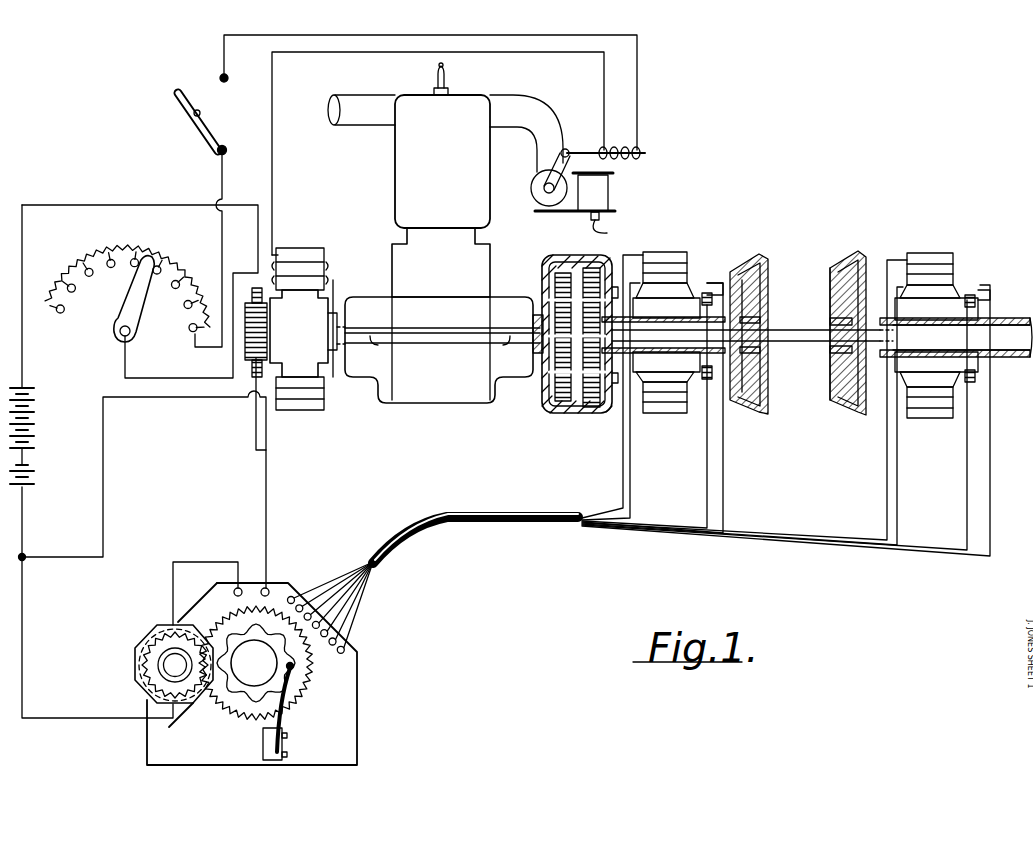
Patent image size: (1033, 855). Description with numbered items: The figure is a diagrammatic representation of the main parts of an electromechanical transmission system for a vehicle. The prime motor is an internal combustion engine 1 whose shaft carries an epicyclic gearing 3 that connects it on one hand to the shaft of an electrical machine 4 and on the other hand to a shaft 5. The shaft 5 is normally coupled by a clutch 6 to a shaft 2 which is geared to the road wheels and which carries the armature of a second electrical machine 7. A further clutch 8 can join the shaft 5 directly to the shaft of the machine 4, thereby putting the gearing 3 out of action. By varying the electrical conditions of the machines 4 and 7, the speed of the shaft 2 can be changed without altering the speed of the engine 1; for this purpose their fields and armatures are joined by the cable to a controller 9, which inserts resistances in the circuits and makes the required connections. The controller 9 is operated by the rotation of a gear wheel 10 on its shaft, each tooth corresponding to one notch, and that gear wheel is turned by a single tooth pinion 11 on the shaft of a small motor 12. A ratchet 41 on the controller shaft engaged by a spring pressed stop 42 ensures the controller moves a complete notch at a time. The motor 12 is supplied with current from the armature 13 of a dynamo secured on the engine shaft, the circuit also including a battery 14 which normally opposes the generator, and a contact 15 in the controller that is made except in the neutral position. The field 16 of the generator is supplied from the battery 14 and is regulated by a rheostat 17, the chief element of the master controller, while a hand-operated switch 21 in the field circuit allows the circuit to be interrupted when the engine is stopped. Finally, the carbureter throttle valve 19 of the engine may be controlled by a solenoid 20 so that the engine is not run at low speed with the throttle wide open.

The internal combustion engine 1 is at (400, 188).
The shaft 2 is at (956, 337).
The epicyclic gearing 3 is at (572, 256).
The electrical machine 4 is at (665, 262).
The shaft 5 is at (816, 343).
The clutch 6 is at (857, 262).
The electrical machine 7 is at (930, 262).
The clutch 8 is at (756, 262).
The controller 9 is at (300, 650).
The gear wheel 10 is at (286, 705).
The single tooth pinion 11 is at (174, 665).
The small motor 12 is at (152, 640).
The armature of dynamo 13 is at (272, 357).
The battery 14 is at (36, 416).
The contact 15 is at (254, 566).
The field 16 is at (312, 258).
The rheostat 17 is at (124, 290).
The carbureter throttle valve 19 is at (533, 187).
The solenoid 20 is at (628, 160).
The switch 21 is at (206, 128).
The ratchet 41 is at (332, 607).
The spring pressed stop 42 is at (296, 672).